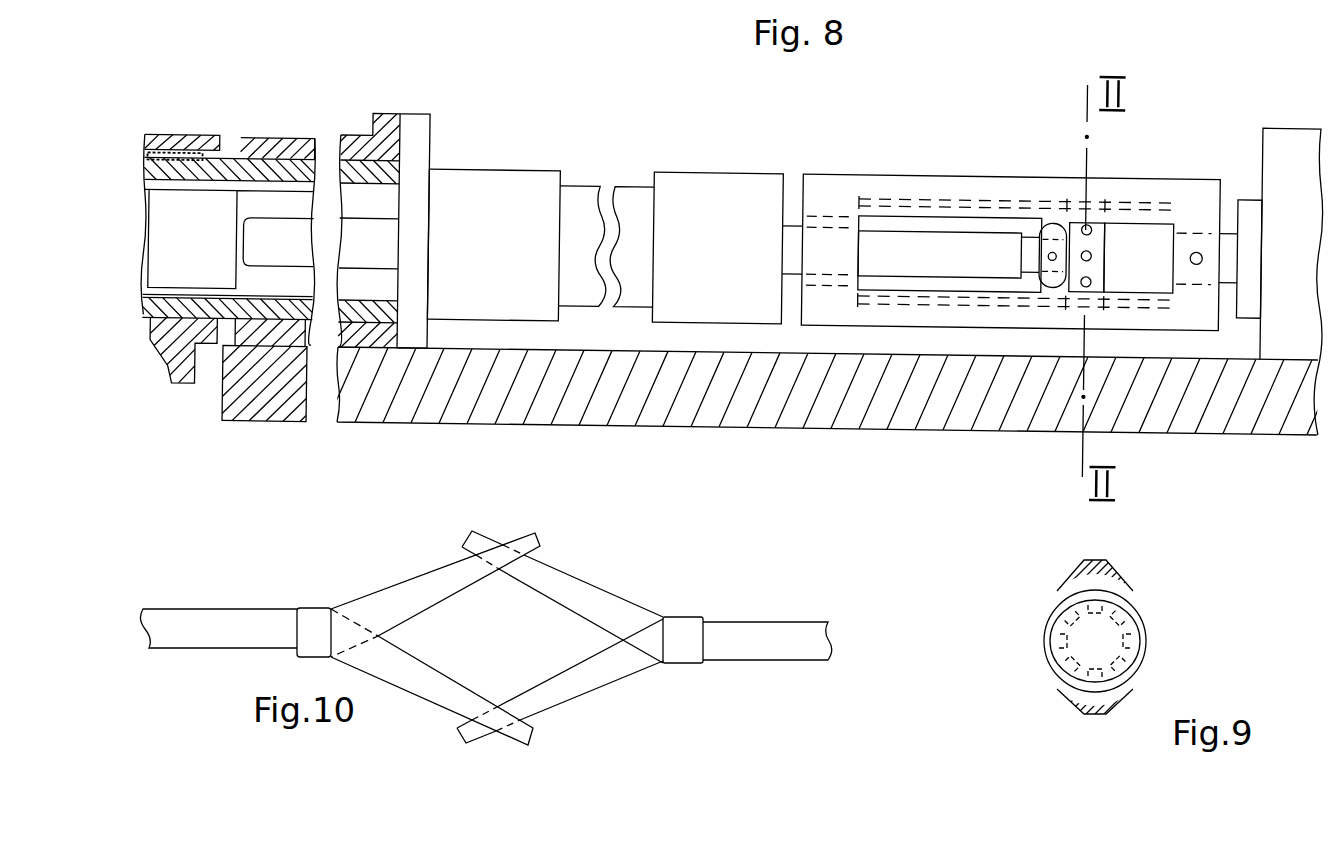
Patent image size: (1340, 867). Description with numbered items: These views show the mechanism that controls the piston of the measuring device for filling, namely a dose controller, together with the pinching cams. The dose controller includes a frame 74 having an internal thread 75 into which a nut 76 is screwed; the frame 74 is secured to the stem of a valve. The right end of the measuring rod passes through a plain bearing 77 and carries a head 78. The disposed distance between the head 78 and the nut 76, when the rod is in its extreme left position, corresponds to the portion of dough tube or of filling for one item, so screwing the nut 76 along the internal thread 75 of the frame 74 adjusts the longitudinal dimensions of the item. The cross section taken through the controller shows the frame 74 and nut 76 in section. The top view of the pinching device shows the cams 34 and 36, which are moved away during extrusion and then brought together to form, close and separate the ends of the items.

In FIG. 10, the cam 34 is at (583, 592).
In FIG. 10, the cam 36 is at (392, 596).
In FIG. 8, the frame 74 is at (861, 176).
In FIG. 9, the frame 74 is at (1107, 568).
In FIG. 8, the internal thread 75 is at (945, 187).
In FIG. 8, the nut 76 is at (1093, 222).
In FIG. 9, the nut 76 is at (1146, 625).
In FIG. 8, the plain bearing 77 is at (811, 217).
In FIG. 8, the head 78 is at (1037, 214).